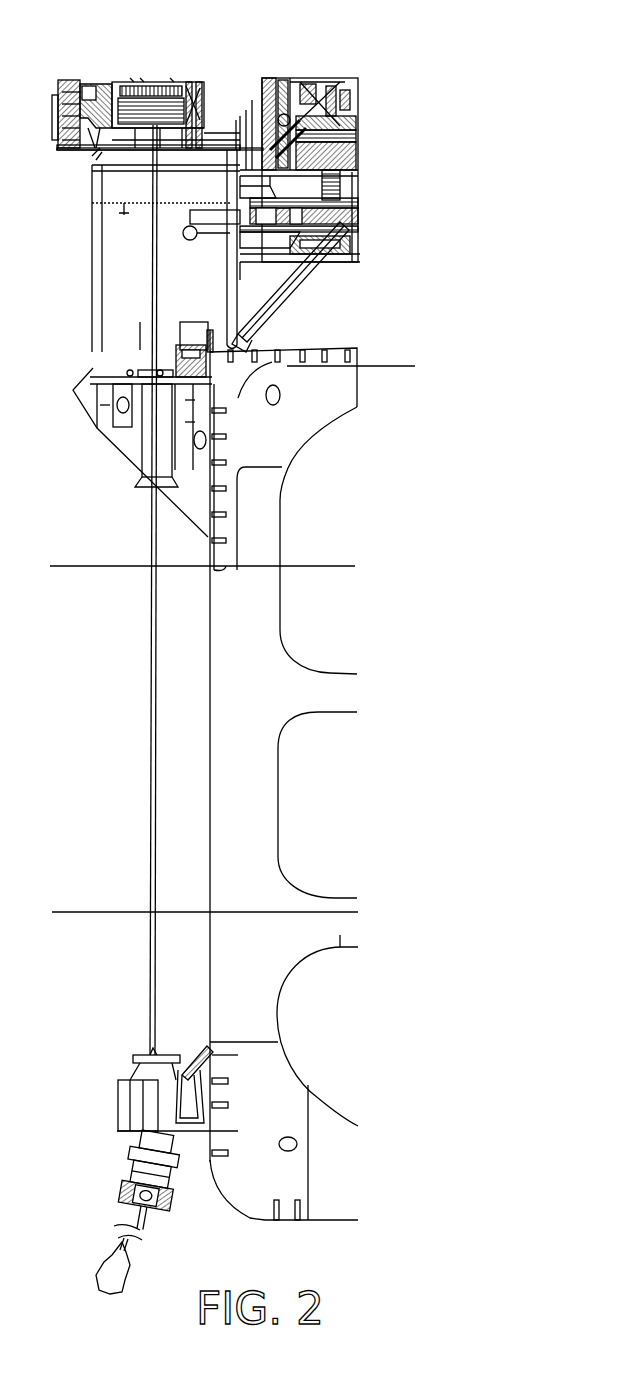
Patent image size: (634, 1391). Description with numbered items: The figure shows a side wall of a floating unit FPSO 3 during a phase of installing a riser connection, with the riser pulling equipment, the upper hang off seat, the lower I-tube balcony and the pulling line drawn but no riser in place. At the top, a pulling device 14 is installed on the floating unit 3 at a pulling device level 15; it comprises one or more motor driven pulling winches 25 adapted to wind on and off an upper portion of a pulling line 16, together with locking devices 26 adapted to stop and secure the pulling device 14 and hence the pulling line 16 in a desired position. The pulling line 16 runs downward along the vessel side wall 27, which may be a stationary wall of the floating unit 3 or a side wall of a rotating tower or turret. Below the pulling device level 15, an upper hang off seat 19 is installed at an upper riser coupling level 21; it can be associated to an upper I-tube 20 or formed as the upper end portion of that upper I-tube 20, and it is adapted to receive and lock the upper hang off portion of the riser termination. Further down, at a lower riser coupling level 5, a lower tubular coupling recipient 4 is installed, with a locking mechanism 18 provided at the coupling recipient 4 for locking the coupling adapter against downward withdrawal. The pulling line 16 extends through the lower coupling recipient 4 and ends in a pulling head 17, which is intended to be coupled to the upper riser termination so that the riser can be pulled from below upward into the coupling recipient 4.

The floating unit FPSO 3 is at (283, 683).
The lower tubular coupling recipient 4 is at (130, 1167).
The lower riser coupling level 5 is at (317, 1160).
The pulling device 14 is at (140, 110).
The pulling device level 15 is at (446, 103).
The pulling line 16 is at (152, 288).
The pulling head 17 is at (100, 1277).
The locking mechanism 18 is at (130, 1186).
The upper hang off seat 19 is at (150, 369).
The upper I-tube 20 is at (140, 467).
The upper riser coupling level 21 is at (370, 362).
The motor driven pulling winch 25 is at (58, 104).
The locking device 26 is at (88, 94).
The vessel side wall 27 is at (210, 677).